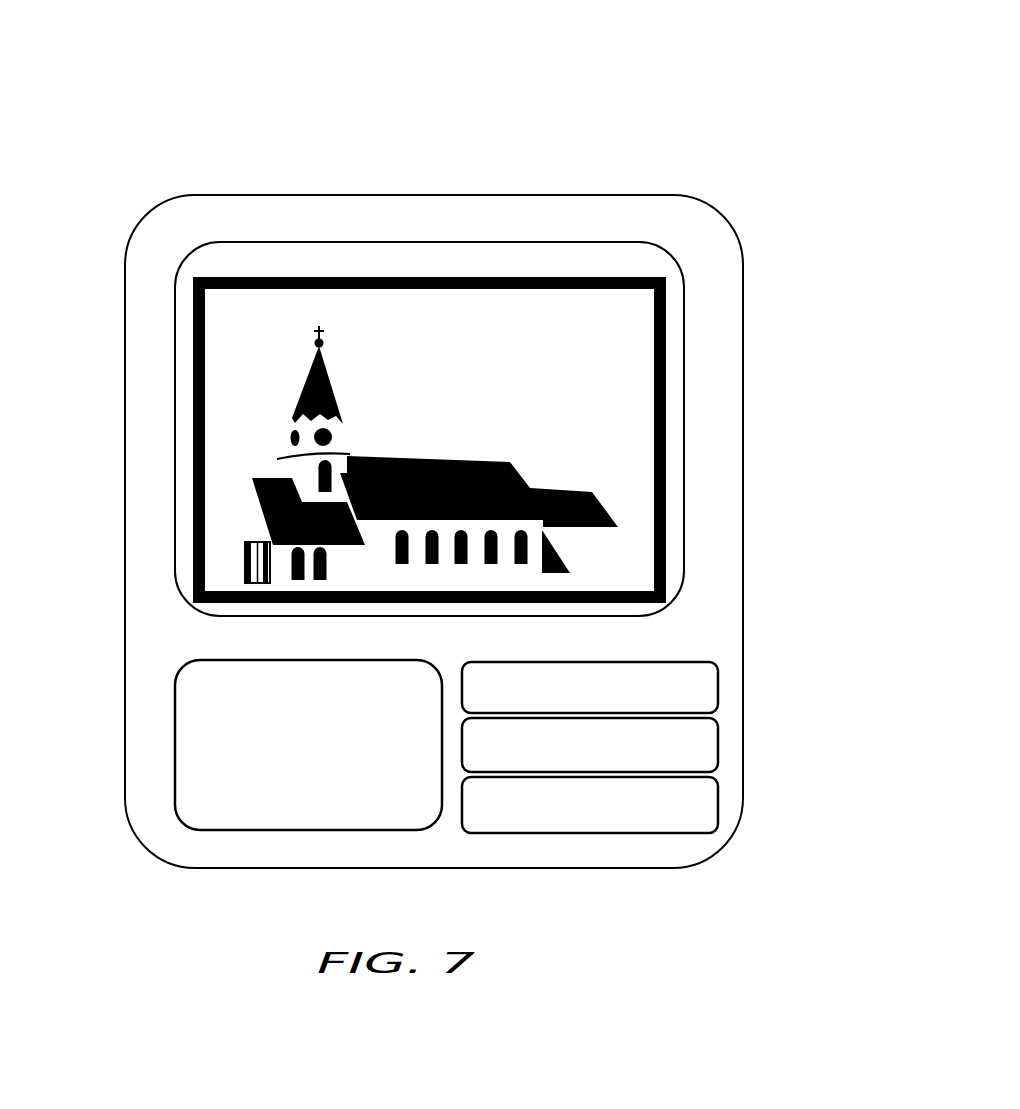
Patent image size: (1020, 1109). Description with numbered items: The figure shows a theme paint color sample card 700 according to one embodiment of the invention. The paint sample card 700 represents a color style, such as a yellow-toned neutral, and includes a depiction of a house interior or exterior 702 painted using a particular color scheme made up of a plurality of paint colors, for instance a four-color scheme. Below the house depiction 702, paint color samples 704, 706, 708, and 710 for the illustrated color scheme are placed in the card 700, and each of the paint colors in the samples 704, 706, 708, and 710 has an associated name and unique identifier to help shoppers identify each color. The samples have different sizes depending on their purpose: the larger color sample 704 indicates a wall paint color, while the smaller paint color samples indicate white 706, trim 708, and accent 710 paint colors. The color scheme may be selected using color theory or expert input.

The theme paint color sample card 700 is at (698, 166).
The depiction of a house interior or exterior 702 is at (652, 452).
The paint color sample 704 is at (191, 744).
The paint color sample 706 is at (713, 690).
The paint color sample 708 is at (713, 758).
The paint color sample 710 is at (705, 822).